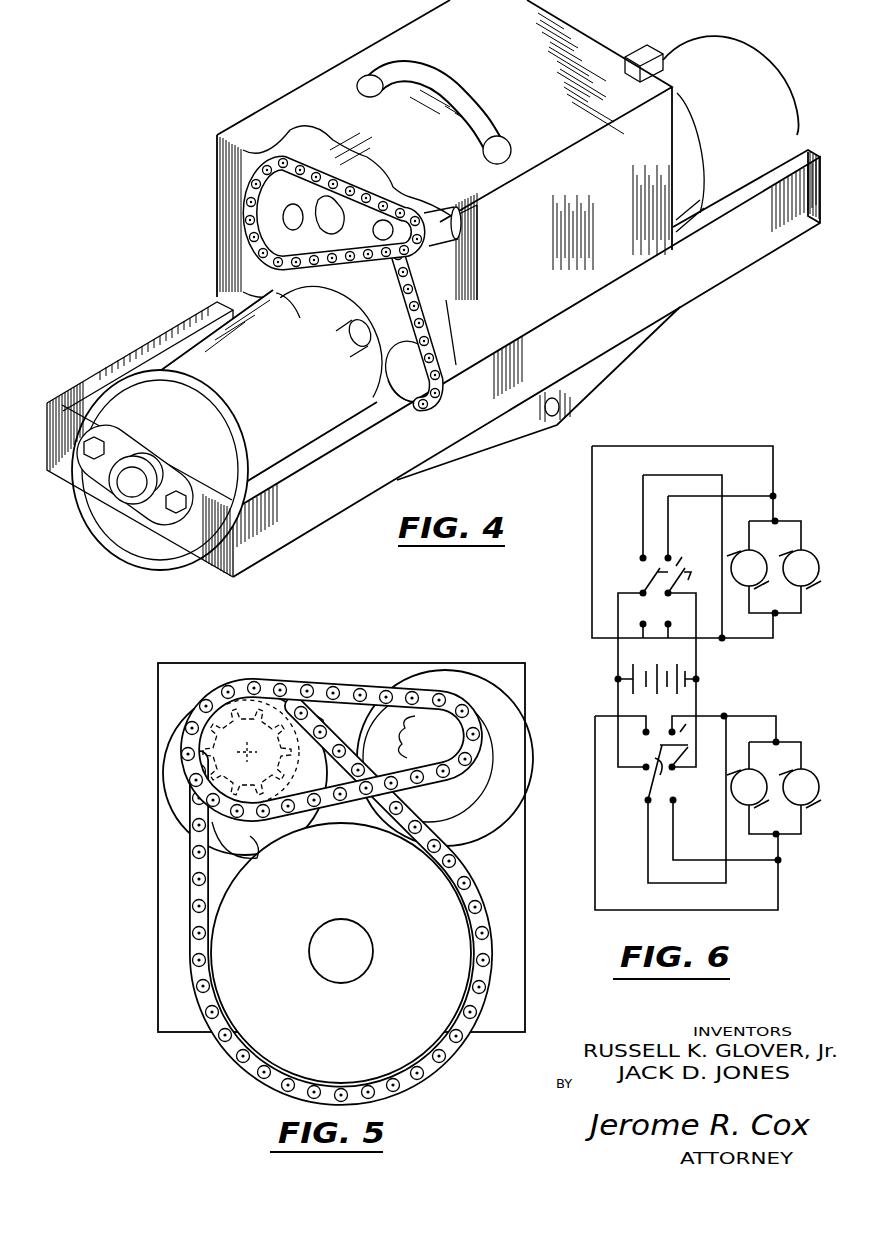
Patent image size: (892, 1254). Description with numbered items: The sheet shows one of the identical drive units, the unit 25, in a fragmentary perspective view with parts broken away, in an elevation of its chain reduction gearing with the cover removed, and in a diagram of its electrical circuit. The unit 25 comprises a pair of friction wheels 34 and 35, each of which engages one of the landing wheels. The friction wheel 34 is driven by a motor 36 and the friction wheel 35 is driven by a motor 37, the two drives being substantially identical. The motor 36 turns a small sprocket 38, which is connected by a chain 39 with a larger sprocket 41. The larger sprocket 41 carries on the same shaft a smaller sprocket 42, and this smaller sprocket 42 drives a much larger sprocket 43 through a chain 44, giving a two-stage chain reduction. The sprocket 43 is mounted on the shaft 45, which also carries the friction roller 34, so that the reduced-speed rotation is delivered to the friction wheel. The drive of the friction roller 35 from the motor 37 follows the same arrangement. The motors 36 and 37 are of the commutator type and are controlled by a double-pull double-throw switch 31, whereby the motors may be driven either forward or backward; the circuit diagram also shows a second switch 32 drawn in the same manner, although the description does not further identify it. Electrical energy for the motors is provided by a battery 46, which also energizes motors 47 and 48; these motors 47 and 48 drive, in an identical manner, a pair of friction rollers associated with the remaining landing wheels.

In FIG. 4, the unit 25 is at (302, 80).
In FIG. 5, the unit 25 is at (155, 690).
In FIG. 6, the double-pull double-throw switch 31 is at (648, 790).
In FIG. 6, the switch 32 is at (645, 590).
In FIG. 4, the friction wheel 34 is at (113, 378).
In FIG. 4, the friction wheel 35 is at (763, 62).
In FIG. 4, the motor 36 is at (443, 234).
In FIG. 5, the motor 36 is at (446, 680).
In FIG. 6, the motor 36 is at (765, 770).
In FIG. 5, the motor 37 is at (172, 800).
In FIG. 6, the motor 37 is at (805, 797).
In FIG. 4, the small sprocket 38 is at (418, 207).
In FIG. 5, the small sprocket 38 is at (433, 752).
In FIG. 4, the chain 39 is at (242, 233).
In FIG. 5, the chain 39 is at (345, 684).
In FIG. 4, the larger sprocket 41 is at (265, 200).
In FIG. 5, the larger sprocket 41 is at (284, 704).
In FIG. 4, the smaller sprocket 42 is at (343, 208).
In FIG. 5, the smaller sprocket 42 is at (238, 745).
In FIG. 4, the much larger sprocket 43 is at (407, 380).
In FIG. 5, the much larger sprocket 43 is at (358, 1029).
In FIG. 4, the chain 44 is at (462, 378).
In FIG. 5, the chain 44 is at (232, 1058).
In FIG. 4, the shaft 45 is at (366, 358).
In FIG. 5, the shaft 45 is at (373, 952).
In FIG. 6, the battery 46 is at (700, 650).
In FIG. 6, the motor 47 is at (762, 552).
In FIG. 6, the motor 48 is at (812, 582).